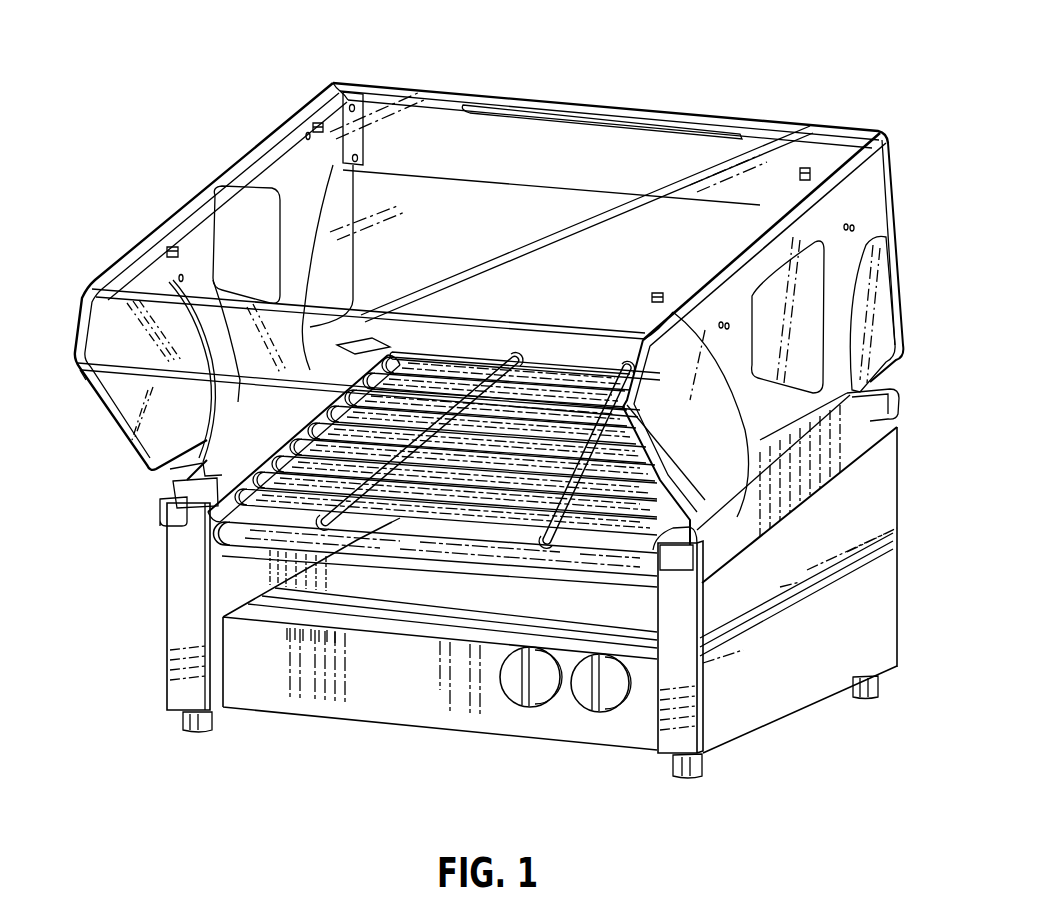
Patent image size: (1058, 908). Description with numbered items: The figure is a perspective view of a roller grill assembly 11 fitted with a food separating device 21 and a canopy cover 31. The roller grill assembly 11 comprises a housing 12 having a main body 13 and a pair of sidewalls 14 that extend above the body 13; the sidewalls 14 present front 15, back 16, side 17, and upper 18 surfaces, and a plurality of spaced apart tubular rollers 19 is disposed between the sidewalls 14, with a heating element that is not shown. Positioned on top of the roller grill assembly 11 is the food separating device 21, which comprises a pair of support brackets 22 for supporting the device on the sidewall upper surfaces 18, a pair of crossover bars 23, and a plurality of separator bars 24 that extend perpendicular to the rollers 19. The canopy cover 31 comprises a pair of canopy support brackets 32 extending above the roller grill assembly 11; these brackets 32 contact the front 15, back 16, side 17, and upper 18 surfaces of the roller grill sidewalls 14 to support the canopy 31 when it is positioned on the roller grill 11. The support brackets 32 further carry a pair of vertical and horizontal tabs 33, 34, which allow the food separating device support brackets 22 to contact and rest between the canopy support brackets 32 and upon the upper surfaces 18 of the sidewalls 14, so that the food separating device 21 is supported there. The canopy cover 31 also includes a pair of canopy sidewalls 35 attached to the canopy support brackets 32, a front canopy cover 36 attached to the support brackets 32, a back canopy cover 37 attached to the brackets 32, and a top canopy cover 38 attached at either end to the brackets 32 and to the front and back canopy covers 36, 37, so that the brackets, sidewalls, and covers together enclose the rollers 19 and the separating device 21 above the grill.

The roller grill assembly 11 is at (905, 540).
The housing 12 is at (752, 683).
The main body 13 is at (395, 683).
The sidewalls 14 is at (155, 585).
The front surface 15 is at (178, 628).
The back surface 16 is at (897, 470).
The side surface 17 is at (882, 635).
The upper surface 18 is at (885, 406).
The tubular rollers 19 is at (240, 540).
The food separating device 21 is at (350, 533).
The support brackets 22 is at (207, 458).
The crossover bars 23 is at (473, 360).
The separator bars 24 is at (610, 370).
The canopy cover 31 is at (205, 150).
The canopy support brackets 32 is at (872, 172).
The vertical tab 33 is at (170, 513).
The horizontal tab 34 is at (185, 495).
The canopy sidewalls 35 is at (868, 280).
The front canopy cover 36 is at (95, 385).
The back canopy cover 37 is at (517, 135).
The top canopy cover 38 is at (835, 122).